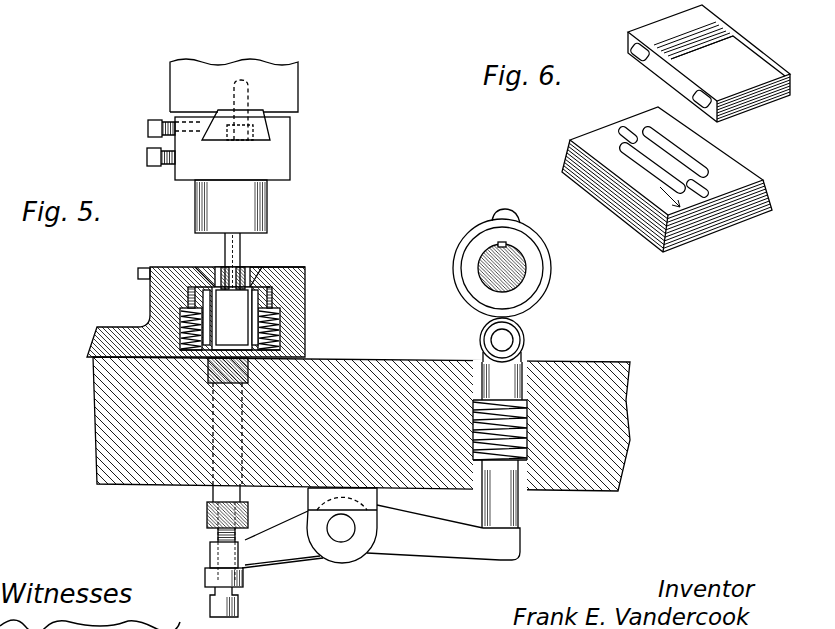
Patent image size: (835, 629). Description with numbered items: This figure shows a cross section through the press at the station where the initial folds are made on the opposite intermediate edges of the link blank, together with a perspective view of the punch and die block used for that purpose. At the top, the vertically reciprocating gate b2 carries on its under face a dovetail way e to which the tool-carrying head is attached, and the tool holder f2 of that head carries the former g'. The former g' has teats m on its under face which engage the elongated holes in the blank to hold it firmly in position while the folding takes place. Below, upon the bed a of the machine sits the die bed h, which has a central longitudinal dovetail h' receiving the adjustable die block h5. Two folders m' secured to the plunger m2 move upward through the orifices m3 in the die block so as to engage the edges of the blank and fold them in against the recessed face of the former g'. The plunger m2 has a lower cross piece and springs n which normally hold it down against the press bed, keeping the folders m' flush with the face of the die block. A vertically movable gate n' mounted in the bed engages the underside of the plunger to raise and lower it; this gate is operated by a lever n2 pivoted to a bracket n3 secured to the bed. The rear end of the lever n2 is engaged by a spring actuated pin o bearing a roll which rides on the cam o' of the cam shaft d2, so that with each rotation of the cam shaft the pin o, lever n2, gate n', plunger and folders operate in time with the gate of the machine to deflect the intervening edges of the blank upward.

In FIG. 5, the bed a is at (610, 435).
In FIG. 5, the vertically reciprocating gate b2 is at (234, 99).
In FIG. 5, the dovetail way e is at (262, 135).
In FIG. 5, the tool holder f2 is at (258, 220).
In FIG. 5, the former g' is at (260, 261).
In FIG. 6, the former g' is at (709, 63).
In FIG. 5, the die bed h is at (213, 311).
In FIG. 5, the die block h5 is at (200, 272).
In FIG. 6, the die block h5 is at (590, 143).
In FIG. 5, the central longitudinal dovetail h' is at (287, 263).
In FIG. 5, the orifices m3 is at (240, 274).
In FIG. 6, the orifices m3 is at (657, 168).
In FIG. 5, the folders m' is at (232, 317).
In FIG. 5, the plunger m2 is at (230, 320).
In FIG. 6, the teats m is at (671, 76).
In FIG. 5, the springs n is at (227, 315).
In FIG. 5, the vertically movable gate n' is at (207, 487).
In FIG. 5, the lever n2 is at (371, 536).
In FIG. 5, the bracket n3 is at (365, 530).
In FIG. 5, the spring actuated pin o is at (519, 439).
In FIG. 5, the cam o' is at (511, 265).
In FIG. 5, the cam shaft d2 is at (520, 268).